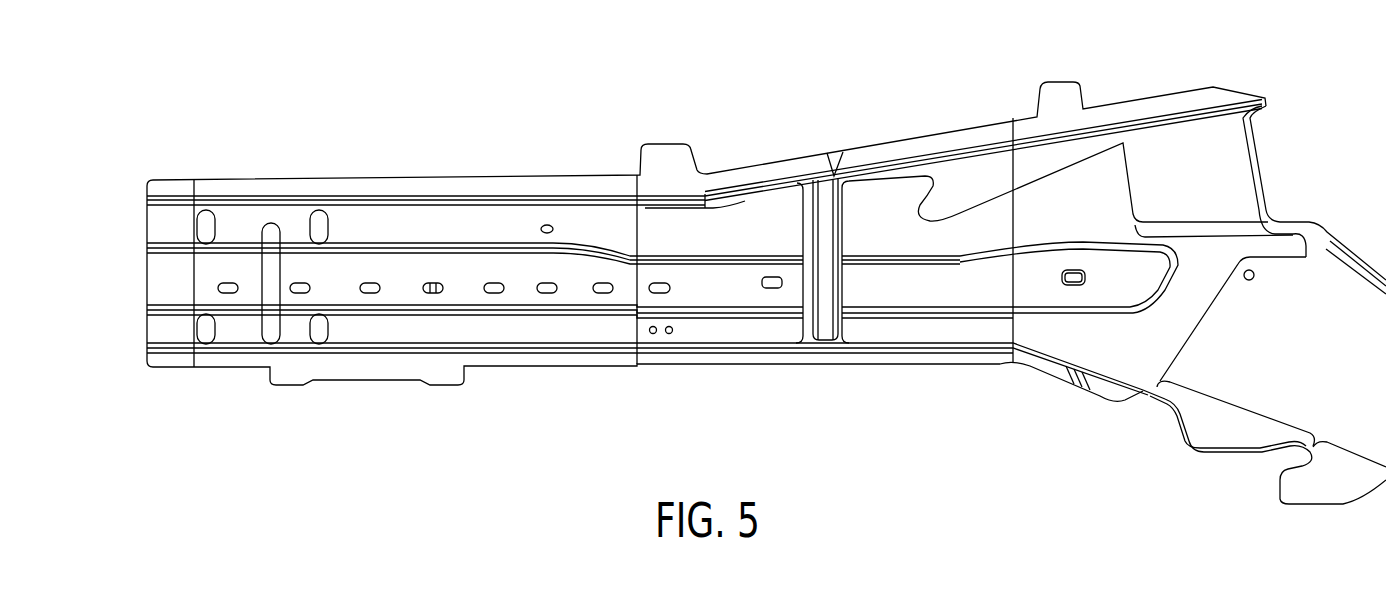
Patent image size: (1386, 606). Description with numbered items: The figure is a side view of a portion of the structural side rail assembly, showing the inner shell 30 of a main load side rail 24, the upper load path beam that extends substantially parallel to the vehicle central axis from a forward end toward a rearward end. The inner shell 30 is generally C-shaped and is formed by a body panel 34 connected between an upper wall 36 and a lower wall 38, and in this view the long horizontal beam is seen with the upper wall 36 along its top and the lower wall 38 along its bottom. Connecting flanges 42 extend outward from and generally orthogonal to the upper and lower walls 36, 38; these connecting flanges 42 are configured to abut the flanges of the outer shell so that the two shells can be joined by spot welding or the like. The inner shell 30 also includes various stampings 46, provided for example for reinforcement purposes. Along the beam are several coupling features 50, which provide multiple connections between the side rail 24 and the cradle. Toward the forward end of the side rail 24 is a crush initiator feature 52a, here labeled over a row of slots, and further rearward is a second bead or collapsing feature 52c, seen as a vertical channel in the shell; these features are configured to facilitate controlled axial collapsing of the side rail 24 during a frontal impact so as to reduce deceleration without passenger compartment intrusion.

The main load side rail 24 is at (1336, 86).
The inner shell 30 is at (584, 160).
The body panel 34 is at (163, 285).
The upper wall 36 is at (163, 198).
The lower wall 38 is at (172, 352).
The connecting flange 42 is at (355, 190).
The stamping 46 is at (445, 232).
The coupling feature 50 is at (293, 400).
The crush initiator feature 52a is at (333, 162).
The second bead or collapsing feature 52c is at (822, 200).